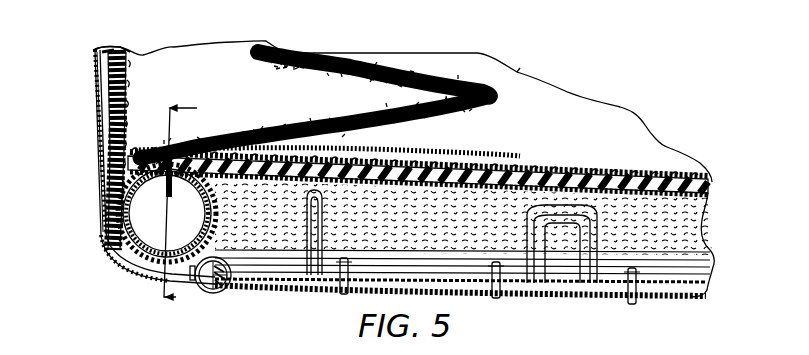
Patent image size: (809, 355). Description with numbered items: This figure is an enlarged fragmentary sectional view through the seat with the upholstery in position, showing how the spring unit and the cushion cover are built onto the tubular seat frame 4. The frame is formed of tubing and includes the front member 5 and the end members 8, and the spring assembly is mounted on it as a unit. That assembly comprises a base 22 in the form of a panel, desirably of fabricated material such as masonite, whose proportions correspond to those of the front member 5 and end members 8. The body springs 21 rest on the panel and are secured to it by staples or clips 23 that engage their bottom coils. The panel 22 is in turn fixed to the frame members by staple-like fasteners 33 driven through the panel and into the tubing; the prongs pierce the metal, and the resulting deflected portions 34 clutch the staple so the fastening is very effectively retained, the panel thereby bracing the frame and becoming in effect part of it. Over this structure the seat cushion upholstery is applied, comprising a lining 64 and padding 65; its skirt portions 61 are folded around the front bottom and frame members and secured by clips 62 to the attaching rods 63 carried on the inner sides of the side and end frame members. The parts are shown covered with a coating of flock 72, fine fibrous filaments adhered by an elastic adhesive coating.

The seat frame 4 is at (189, 208).
The front member 5 is at (106, 233).
The end members 8 is at (273, 270).
The body springs 21 is at (385, 62).
The base 22 is at (561, 172).
The staples or clips 23 is at (373, 152).
The staple-like fasteners 33 is at (178, 194).
The deflected portions 34 is at (160, 178).
The skirt portions 61 is at (100, 118).
The clips 62 is at (212, 294).
The attaching rods 63 is at (228, 288).
The lining 64 is at (128, 58).
The padding 65 is at (98, 72).
The flock 72 is at (482, 122).